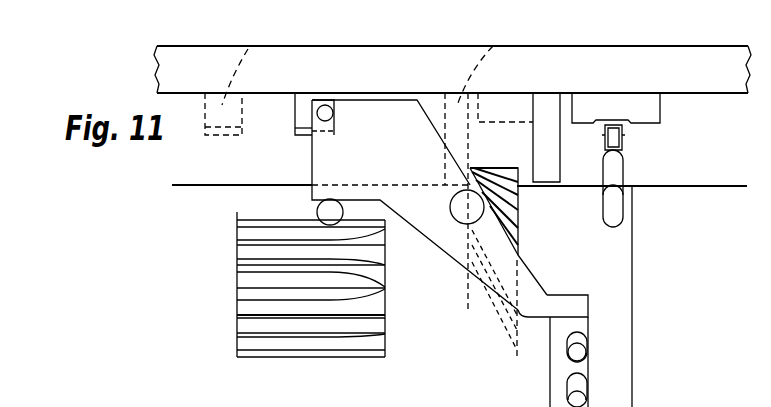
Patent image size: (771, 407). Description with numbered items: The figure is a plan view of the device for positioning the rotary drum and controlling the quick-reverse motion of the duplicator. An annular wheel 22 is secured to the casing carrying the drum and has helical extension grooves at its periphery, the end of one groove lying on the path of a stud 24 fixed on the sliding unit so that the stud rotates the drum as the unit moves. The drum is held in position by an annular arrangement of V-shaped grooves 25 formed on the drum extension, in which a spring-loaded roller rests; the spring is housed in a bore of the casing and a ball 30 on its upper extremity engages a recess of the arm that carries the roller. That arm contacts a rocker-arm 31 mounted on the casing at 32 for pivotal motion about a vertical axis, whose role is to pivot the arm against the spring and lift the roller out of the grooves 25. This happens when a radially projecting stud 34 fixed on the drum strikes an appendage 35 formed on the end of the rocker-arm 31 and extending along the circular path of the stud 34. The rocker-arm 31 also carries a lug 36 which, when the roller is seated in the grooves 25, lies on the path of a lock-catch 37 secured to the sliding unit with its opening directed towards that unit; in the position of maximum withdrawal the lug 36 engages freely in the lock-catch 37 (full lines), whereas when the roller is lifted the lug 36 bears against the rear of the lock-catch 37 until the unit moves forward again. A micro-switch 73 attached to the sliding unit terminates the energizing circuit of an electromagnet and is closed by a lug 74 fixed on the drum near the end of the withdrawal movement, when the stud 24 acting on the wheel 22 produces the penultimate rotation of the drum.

The annular wheel 22 is at (515, 182).
The stud 24 is at (540, 103).
The V-shaped grooves 25 is at (243, 260).
The ball 30 is at (321, 210).
The rocker-arm 31 is at (382, 110).
The pivot mounting of rocker-arm 32 is at (477, 170).
The stud 34 is at (587, 352).
The appendage 35 is at (587, 307).
The lug 36 is at (326, 105).
The lock-catch 37 is at (302, 100).
The micro-switch 73 is at (615, 125).
The lug 74 is at (620, 164).